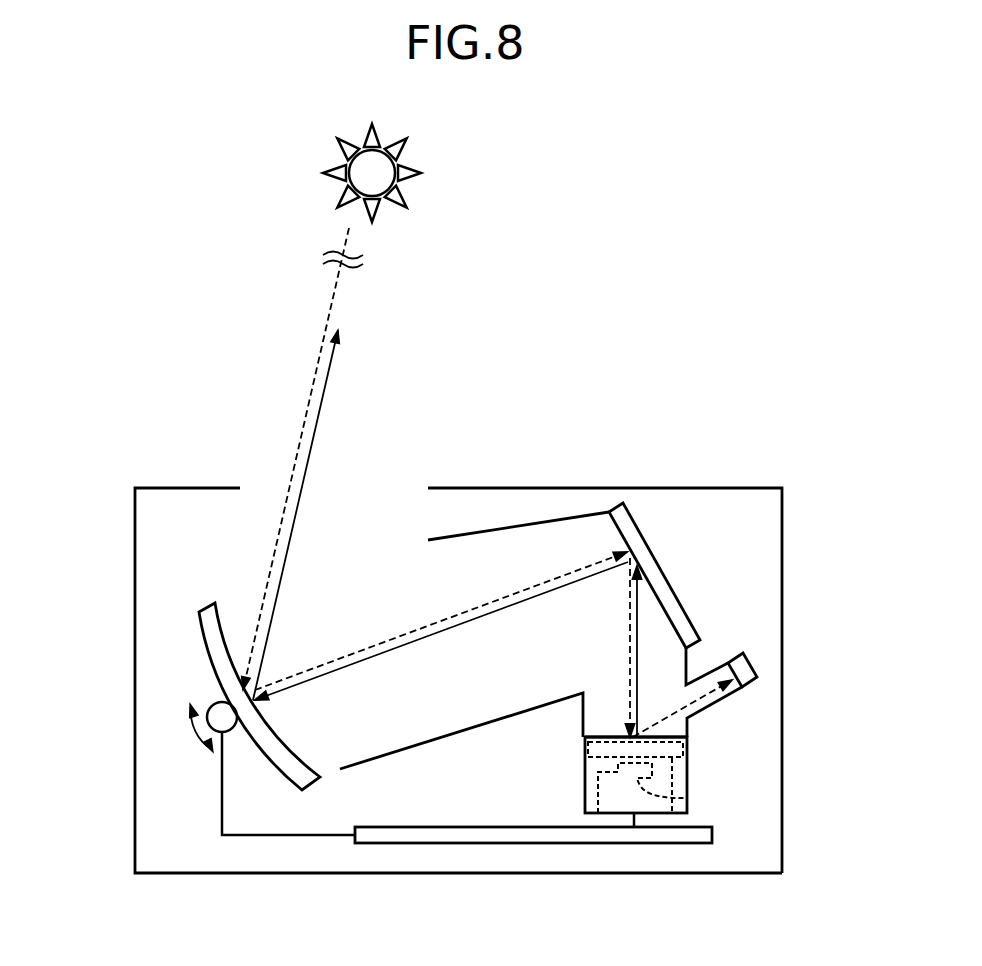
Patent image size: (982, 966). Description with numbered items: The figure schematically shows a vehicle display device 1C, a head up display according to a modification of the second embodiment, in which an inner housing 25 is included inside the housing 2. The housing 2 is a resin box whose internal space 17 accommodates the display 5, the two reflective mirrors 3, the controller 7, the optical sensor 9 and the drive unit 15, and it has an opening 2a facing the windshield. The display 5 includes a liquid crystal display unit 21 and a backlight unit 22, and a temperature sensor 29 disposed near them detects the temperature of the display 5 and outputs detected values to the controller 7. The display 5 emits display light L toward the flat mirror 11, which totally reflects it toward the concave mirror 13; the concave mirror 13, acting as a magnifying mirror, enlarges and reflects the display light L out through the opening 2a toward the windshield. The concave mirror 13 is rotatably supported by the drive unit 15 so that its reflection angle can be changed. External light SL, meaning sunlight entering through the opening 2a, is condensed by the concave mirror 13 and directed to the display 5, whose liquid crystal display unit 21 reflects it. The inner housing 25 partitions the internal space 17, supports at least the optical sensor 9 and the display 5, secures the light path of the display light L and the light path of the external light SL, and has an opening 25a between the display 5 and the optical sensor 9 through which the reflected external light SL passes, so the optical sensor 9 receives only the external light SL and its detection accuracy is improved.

The vehicle display device 1C is at (772, 453).
The housing 2 is at (732, 487).
The opening 2a is at (415, 482).
The reflective mirror 3 is at (367, 610).
The display 5 is at (715, 777).
The controller 7 is at (713, 832).
The optical sensor 9 is at (755, 663).
The flat mirror 11 is at (646, 542).
The concave mirror 13 is at (204, 634).
The drive unit 15 is at (210, 707).
The internal space 17 is at (765, 555).
The liquid crystal display unit 21 is at (683, 749).
The backlight unit 22 is at (739, 755).
The inner housing 25 is at (533, 522).
The opening 25a is at (687, 737).
The temperature sensor 29 is at (687, 797).
The external light SL is at (335, 291).
The display light L is at (305, 478).